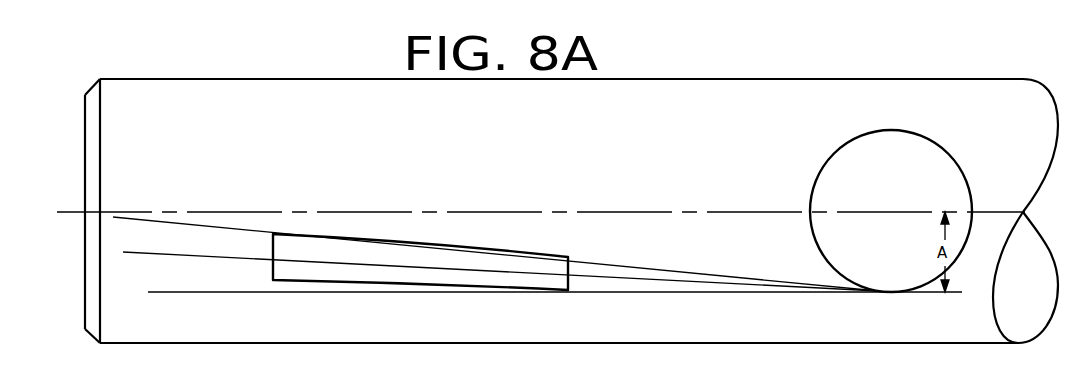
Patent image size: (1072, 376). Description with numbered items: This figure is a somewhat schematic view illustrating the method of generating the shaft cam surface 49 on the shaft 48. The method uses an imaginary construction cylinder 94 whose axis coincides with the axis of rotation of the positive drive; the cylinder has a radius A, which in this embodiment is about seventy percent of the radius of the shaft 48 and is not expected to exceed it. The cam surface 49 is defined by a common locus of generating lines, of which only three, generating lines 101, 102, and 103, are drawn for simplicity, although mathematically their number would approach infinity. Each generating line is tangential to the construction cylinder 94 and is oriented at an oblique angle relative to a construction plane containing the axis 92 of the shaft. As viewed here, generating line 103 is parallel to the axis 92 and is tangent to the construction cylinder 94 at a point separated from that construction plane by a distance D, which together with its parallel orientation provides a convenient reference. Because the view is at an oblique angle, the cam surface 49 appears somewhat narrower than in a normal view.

The shaft 48 is at (824, 94).
The shaft cam surface 49 is at (478, 259).
The axis of the shaft 92 is at (652, 208).
The construction cylinder 94 is at (958, 163).
The generating line 101 is at (127, 219).
The generating line 102 is at (138, 253).
The generating line 103 is at (157, 293).